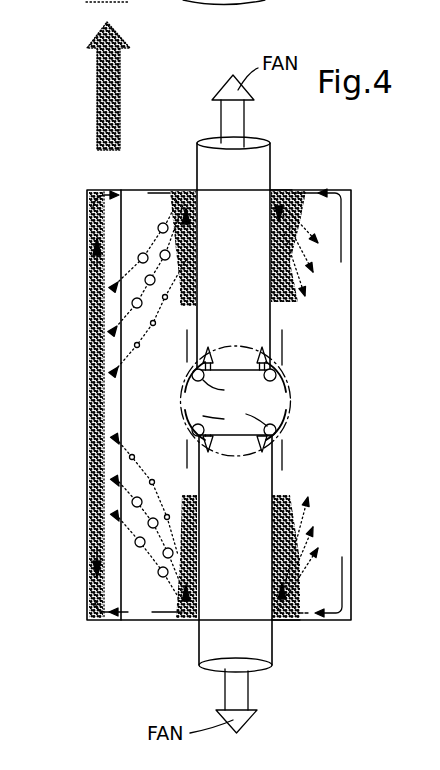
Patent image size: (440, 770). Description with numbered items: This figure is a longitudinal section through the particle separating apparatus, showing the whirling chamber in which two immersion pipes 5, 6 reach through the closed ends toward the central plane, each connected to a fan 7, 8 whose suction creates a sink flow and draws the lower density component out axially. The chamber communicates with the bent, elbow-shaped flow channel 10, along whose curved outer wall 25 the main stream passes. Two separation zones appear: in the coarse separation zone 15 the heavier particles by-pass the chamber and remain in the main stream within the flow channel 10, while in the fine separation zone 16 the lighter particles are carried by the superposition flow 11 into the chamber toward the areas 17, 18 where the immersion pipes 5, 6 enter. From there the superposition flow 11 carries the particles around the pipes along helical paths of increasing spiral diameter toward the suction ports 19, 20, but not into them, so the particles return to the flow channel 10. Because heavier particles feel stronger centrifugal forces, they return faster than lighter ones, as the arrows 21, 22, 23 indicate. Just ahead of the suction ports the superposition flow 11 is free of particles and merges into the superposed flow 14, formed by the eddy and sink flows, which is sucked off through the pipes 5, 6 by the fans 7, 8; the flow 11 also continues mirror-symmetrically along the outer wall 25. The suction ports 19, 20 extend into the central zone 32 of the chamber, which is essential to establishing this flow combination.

The immersion pipe 5 is at (272, 322).
The immersion pipe 6 is at (275, 475).
The fan 7 is at (244, 115).
The fan 8 is at (250, 695).
The flow channel 10 is at (112, 367).
The superposition flow 11 is at (150, 193).
The superposed flow 14 is at (270, 377).
The coarse separation zone 15 is at (97, 312).
The fine separation zone 16 is at (283, 251).
The pipe entry area 17 is at (273, 188).
The pipe entry area 18 is at (274, 620).
The suction port 19 is at (234, 370).
The suction port 20 is at (235, 435).
The particle return arrow 21 is at (152, 243).
The particle return arrow 22 is at (140, 292).
The particle return arrow 23 is at (130, 358).
The curved outer wall 25 is at (90, 445).
The central zone 32 is at (182, 410).